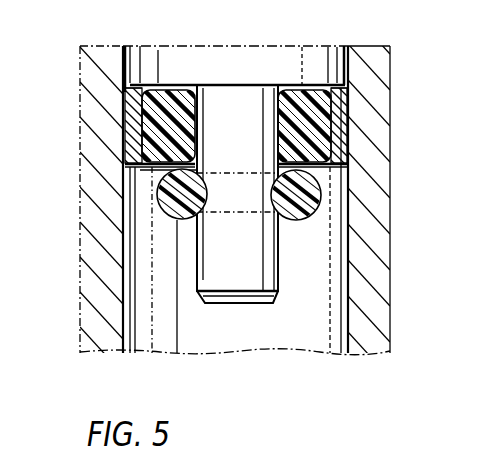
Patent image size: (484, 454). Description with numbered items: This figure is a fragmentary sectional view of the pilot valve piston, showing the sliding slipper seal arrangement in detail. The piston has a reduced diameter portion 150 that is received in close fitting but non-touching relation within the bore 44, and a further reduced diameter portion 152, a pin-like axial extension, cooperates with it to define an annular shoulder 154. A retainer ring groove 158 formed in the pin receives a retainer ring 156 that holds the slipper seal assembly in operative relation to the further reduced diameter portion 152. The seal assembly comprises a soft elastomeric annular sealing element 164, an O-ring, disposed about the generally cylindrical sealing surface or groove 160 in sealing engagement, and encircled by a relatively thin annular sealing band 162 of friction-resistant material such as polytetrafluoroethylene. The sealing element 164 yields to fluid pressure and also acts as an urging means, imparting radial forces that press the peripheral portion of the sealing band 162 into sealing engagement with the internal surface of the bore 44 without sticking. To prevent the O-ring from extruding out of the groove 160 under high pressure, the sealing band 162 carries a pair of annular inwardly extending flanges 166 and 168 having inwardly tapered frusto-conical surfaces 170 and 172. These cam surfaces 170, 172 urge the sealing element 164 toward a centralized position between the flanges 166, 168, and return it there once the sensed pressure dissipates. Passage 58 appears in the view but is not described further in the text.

The bore 44 is at (384, 338).
The passage 58 is at (153, 169).
The reduced diameter portion 150 is at (340, 72).
The further reduced diameter portion 152 is at (278, 277).
The annular shoulder 154 is at (168, 83).
The retainer ring 156 is at (311, 66).
The retainer ring groove 158 is at (165, 225).
The groove 160 is at (197, 277).
The annular sealing band 162 is at (140, 102).
The elastomeric annular sealing element 164 is at (155, 128).
The annular inwardly extending flange 166 is at (322, 196).
The annular inwardly extending flange 168 is at (322, 104).
The frusto-conical surface 170 is at (332, 150).
The frusto-conical surface 172 is at (345, 135).